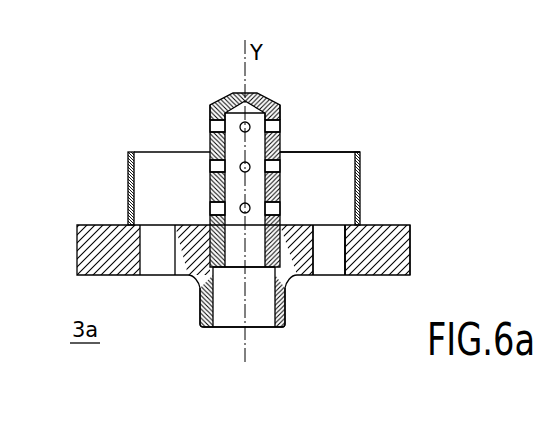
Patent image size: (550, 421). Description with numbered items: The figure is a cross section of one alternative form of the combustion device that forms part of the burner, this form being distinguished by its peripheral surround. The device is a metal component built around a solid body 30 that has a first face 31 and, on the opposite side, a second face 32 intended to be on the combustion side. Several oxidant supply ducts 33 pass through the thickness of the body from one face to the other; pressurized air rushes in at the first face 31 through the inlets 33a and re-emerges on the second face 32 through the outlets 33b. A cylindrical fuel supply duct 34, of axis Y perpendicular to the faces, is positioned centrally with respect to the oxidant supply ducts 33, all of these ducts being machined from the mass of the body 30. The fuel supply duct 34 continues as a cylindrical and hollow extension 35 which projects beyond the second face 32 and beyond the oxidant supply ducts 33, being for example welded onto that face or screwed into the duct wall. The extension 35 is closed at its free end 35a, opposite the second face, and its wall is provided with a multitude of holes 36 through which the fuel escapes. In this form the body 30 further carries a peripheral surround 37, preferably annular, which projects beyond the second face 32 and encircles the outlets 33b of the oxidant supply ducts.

The solid body 30 is at (410, 255).
The first face 31 is at (357, 276).
The second face 32 is at (138, 222).
The oxidant supply ducts 33 is at (160, 265).
The inlets 33a is at (322, 277).
The outlets 33b is at (338, 226).
The cylindrical fuel supply duct 34 is at (257, 313).
The cylindrical and hollow extension 35 is at (281, 192).
The free end 35a is at (225, 97).
The holes 36 is at (209, 165).
The peripheral surround 37 is at (337, 154).